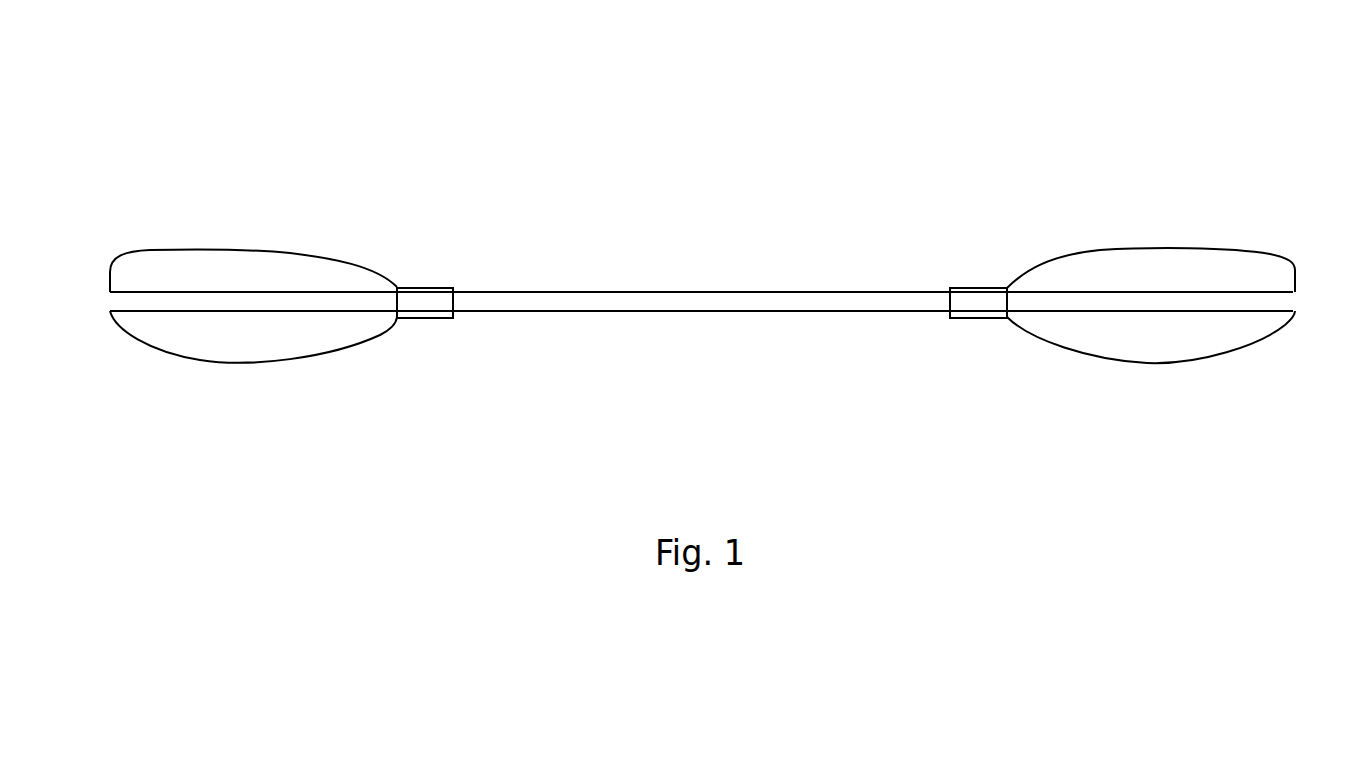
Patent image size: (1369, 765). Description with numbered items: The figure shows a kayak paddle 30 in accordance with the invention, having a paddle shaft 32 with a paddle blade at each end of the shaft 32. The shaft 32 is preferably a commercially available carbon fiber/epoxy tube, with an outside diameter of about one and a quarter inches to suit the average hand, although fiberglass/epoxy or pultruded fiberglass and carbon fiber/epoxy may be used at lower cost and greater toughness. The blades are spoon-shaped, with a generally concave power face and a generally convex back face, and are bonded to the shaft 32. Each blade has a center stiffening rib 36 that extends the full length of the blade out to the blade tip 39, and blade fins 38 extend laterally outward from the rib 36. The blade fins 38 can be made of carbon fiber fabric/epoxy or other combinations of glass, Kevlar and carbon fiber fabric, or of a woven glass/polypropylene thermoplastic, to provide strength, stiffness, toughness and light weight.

The kayak paddle 30 is at (837, 165).
The paddle shaft 32 is at (550, 292).
The center stiffening rib 36 is at (1195, 301).
The blade fins 38 is at (1128, 335).
The blade tip 39 is at (1297, 267).